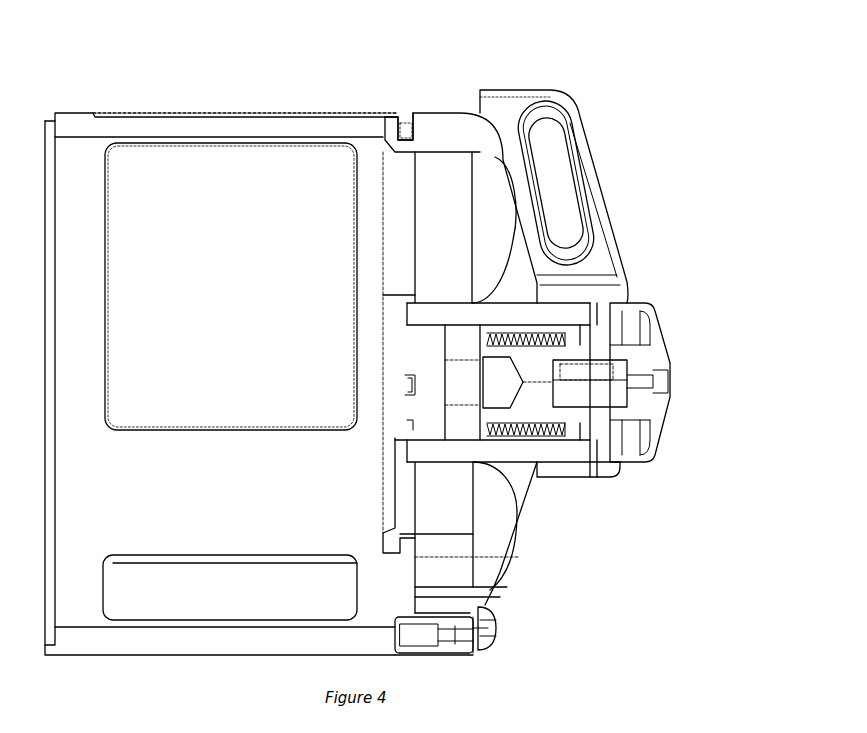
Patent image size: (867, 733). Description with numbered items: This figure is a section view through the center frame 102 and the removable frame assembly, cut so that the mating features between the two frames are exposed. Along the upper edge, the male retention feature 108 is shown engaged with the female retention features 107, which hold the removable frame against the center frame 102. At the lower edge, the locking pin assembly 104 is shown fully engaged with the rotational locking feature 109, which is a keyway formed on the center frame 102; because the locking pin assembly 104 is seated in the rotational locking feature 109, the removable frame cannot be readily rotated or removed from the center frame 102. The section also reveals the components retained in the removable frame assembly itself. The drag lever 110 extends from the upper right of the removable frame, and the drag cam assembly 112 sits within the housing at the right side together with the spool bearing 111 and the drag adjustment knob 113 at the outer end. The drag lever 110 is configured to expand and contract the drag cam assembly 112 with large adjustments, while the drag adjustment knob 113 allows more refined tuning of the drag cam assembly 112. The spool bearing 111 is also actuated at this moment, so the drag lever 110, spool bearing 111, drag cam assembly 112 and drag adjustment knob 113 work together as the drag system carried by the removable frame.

The center frame 102 is at (282, 115).
The locking pin assembly 104 is at (495, 633).
The female retention features 107 is at (415, 133).
The male retention feature 108 is at (395, 125).
The rotational locking feature 109 is at (400, 635).
The drag lever 110 is at (560, 195).
The spool bearing 111 is at (463, 378).
The drag cam assembly 112 is at (542, 380).
The drag adjustment knob 113 is at (647, 440).